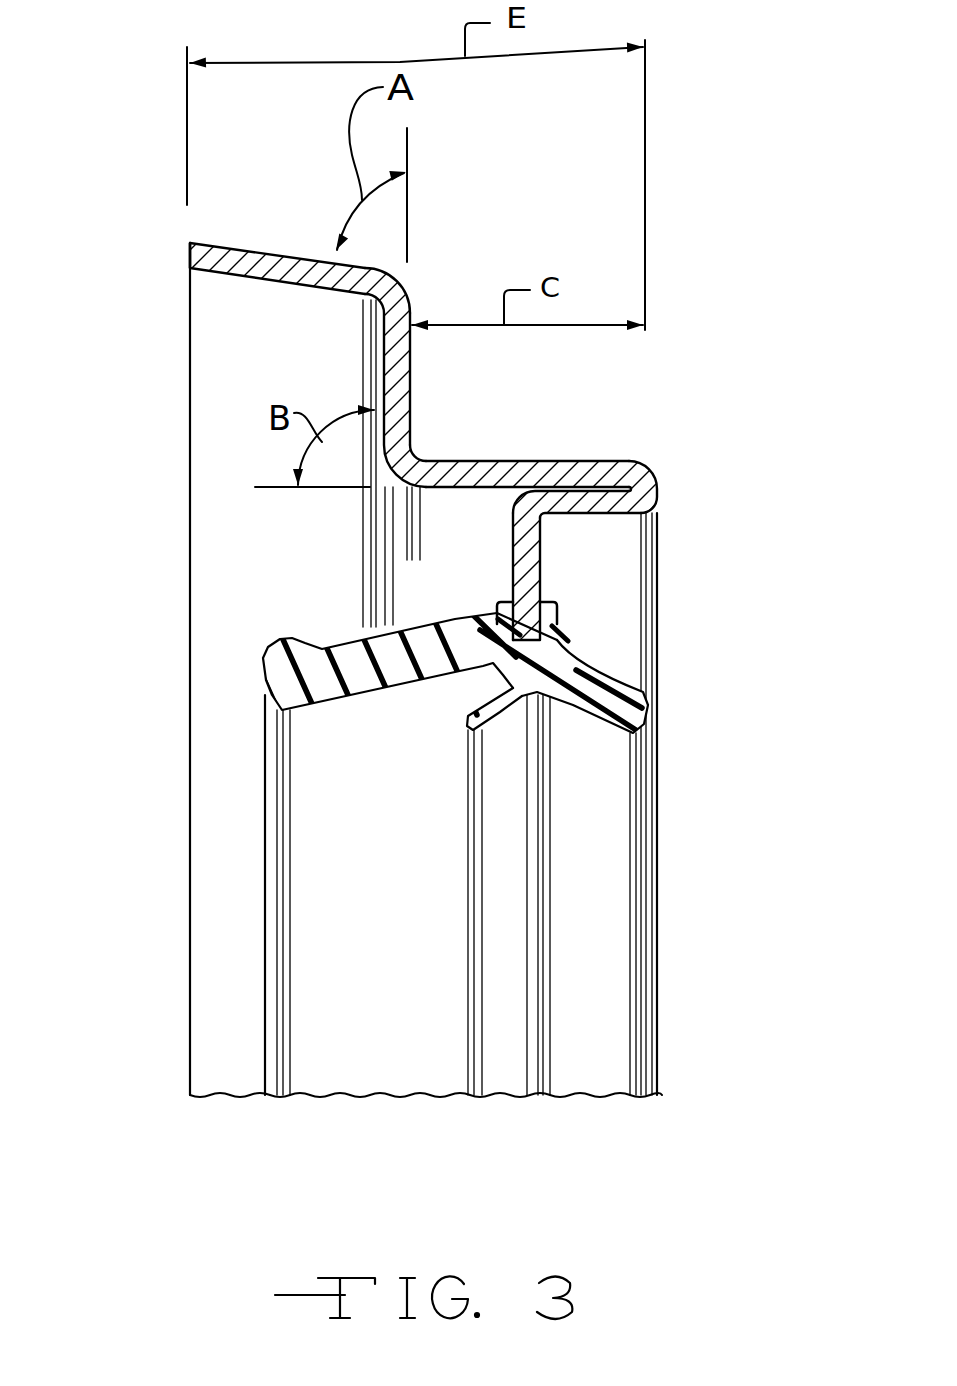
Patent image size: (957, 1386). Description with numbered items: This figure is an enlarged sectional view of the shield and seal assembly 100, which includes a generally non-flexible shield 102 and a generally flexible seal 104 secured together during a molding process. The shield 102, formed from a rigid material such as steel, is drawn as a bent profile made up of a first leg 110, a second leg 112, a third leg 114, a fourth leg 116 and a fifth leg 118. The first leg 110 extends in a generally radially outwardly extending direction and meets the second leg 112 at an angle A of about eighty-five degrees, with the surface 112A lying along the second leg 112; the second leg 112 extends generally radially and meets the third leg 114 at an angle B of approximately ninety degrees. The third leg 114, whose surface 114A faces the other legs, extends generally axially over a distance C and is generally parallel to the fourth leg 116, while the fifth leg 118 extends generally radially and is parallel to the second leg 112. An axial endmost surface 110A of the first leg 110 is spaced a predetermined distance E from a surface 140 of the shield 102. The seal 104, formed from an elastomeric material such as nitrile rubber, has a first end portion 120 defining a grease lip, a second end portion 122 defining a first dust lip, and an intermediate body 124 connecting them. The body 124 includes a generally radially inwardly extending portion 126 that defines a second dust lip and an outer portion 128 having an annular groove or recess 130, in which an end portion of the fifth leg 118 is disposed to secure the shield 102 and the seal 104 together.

The shield and seal assembly 100 is at (614, 240).
The shield 102 is at (478, 421).
The seal 104 is at (502, 676).
The first leg 110 is at (263, 262).
The axial endmost surface 110A is at (190, 253).
The second leg 112 is at (402, 370).
The web inner surface 112A is at (415, 411).
The third leg 114 is at (533, 462).
The lower flange upper surface 114A is at (577, 461).
The fourth leg 116 is at (618, 510).
The fifth leg 118 is at (537, 575).
The first end portion 120 is at (650, 722).
The second end portion 122 is at (252, 643).
The intermediate body 124 is at (483, 618).
The radially inwardly extending portion 126 is at (483, 735).
The outer portion 128 is at (556, 606).
The annular groove or recess 130 is at (513, 558).
The surface 140 is at (657, 479).